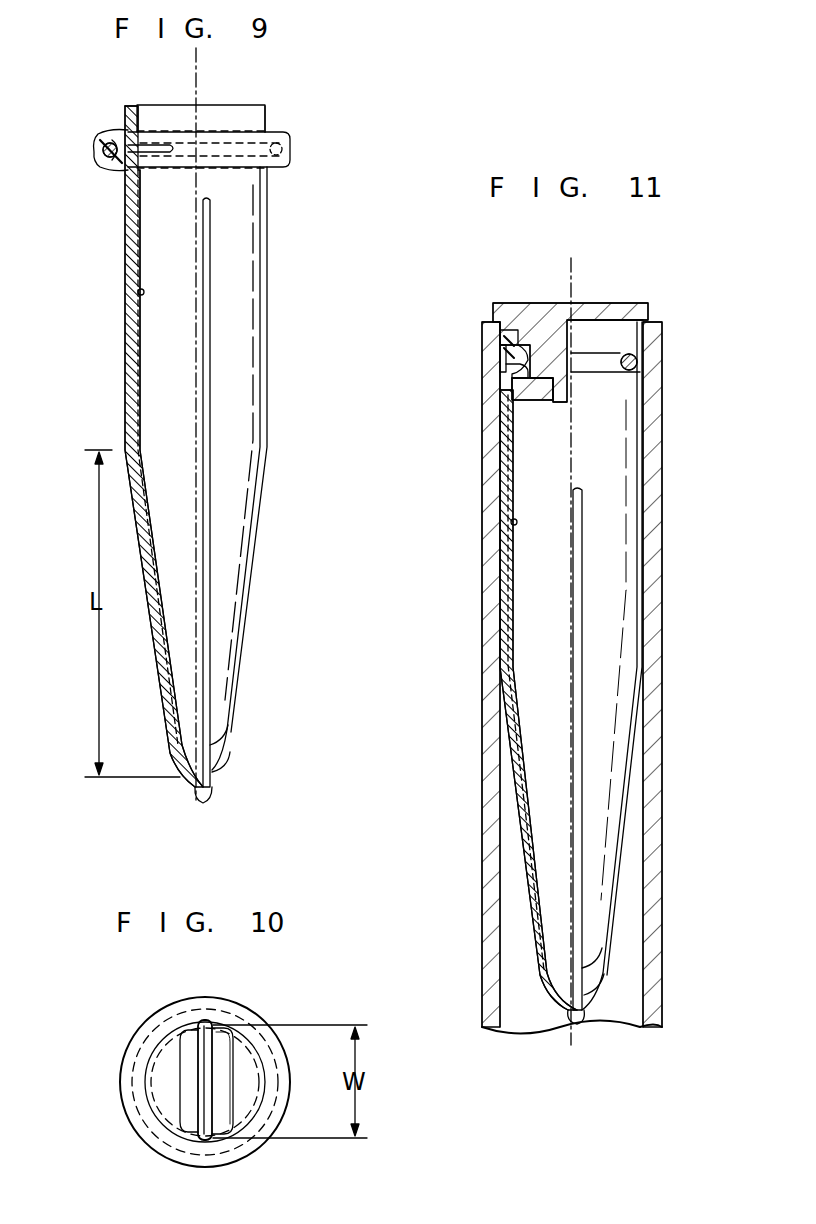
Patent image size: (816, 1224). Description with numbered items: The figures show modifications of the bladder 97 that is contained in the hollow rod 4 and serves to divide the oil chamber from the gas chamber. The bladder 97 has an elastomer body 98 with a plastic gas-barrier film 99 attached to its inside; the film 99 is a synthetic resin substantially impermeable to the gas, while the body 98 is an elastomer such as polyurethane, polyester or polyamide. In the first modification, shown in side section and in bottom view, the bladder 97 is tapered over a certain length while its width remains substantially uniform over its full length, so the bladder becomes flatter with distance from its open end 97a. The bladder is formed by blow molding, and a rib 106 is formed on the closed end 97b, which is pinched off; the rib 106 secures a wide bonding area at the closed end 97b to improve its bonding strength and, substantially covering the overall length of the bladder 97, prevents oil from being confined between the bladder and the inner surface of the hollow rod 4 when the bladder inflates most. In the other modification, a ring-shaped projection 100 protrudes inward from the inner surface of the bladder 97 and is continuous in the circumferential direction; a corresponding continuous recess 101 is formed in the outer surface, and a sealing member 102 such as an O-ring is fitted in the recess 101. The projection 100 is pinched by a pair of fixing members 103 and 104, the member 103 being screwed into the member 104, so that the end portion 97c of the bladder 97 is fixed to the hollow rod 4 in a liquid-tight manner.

In FIG. 11, the hollow rod 4 is at (655, 475).
In FIG. 9, the bladder 97 is at (268, 300).
In FIG. 10, the bladder 97 is at (252, 1004).
In FIG. 11, the bladder 97 is at (615, 893).
In FIG. 9, the open end 97a is at (240, 103).
In FIG. 9, the closed end 97b is at (212, 800).
In FIG. 10, the closed end 97b is at (220, 1055).
In FIG. 11, the closed end 97b is at (586, 1020).
In FIG. 9, the end portion 97c is at (292, 157).
In FIG. 11, the end portion 97c is at (500, 350).
In FIG. 9, the elastomer body 98 is at (136, 382).
In FIG. 11, the elastomer body 98 is at (500, 569).
In FIG. 9, the gas-barrier film 99 is at (138, 292).
In FIG. 11, the gas-barrier film 99 is at (510, 522).
In FIG. 9, the projection 100 is at (104, 172).
In FIG. 10, the projection 100 is at (128, 1010).
In FIG. 11, the projection 100 is at (514, 352).
In FIG. 9, the recess 101 is at (150, 147).
In FIG. 10, the recess 101 is at (130, 1103).
In FIG. 11, the recess 101 is at (506, 375).
In FIG. 9, the sealing member 102 is at (103, 150).
In FIG. 10, the sealing member 102 is at (153, 1128).
In FIG. 11, the sealing member 102 is at (637, 362).
In FIG. 11, the fixing member 103 is at (548, 300).
In FIG. 11, the fixing member 104 is at (540, 402).
In FIG. 9, the rib 106 is at (220, 745).
In FIG. 10, the rib 106 is at (214, 1110).
In FIG. 11, the rib 106 is at (588, 965).